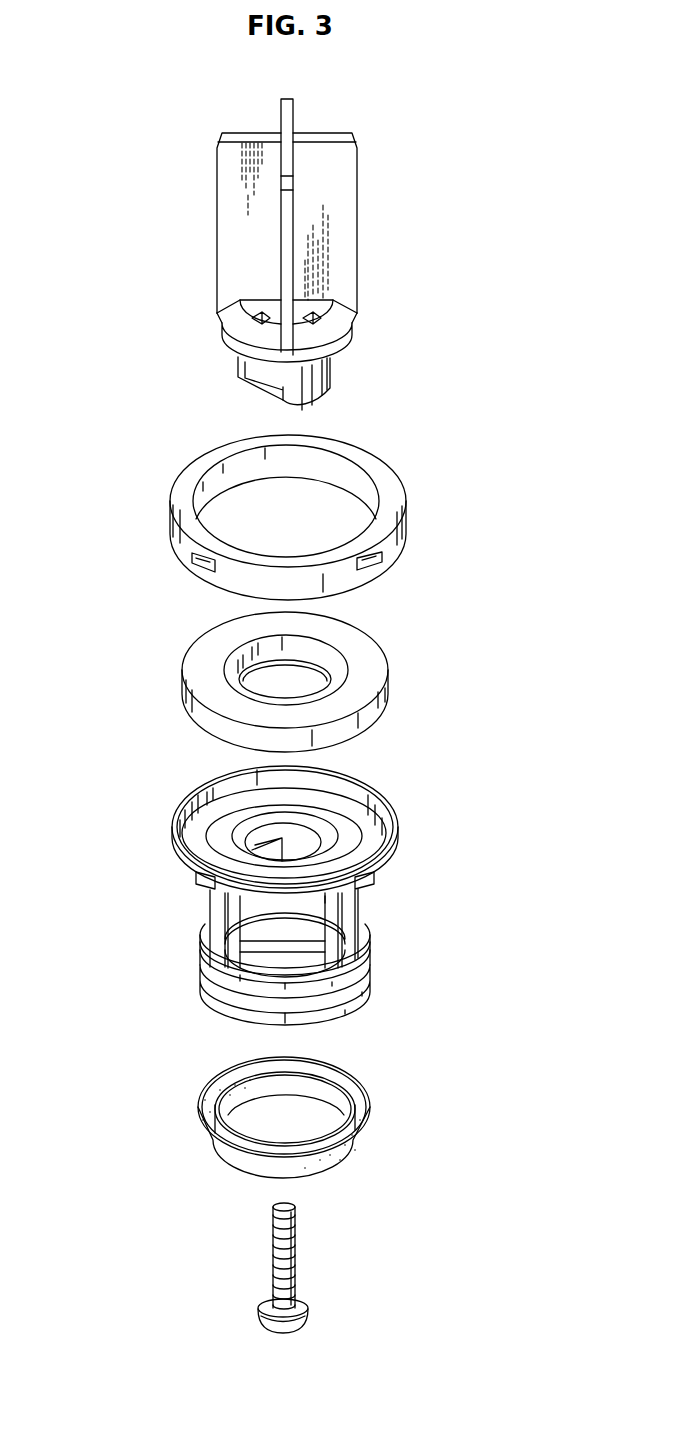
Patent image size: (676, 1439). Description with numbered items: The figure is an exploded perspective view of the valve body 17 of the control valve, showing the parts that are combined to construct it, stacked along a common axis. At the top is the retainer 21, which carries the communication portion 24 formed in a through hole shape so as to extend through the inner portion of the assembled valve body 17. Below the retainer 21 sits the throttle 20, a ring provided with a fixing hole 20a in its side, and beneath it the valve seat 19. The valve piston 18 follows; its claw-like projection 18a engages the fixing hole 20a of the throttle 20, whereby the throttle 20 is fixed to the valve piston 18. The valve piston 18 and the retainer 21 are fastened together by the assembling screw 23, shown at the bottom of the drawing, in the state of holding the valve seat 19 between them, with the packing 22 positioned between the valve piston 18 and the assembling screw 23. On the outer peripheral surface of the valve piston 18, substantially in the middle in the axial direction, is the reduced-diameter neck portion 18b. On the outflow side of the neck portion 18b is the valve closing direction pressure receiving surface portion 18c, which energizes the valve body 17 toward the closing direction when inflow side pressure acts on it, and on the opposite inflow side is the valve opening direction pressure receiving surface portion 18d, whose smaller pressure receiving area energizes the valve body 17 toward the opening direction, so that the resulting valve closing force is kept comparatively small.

The valve body 17 is at (142, 239).
The valve piston 18 is at (398, 830).
The claw-like projection 18a is at (196, 880).
The neck portion 18b is at (280, 933).
The valve closing direction pressure receiving surface portion 18c is at (282, 917).
The valve opening direction pressure receiving surface portion 18d is at (270, 979).
The valve seat 19 is at (373, 672).
The throttle 20 is at (382, 484).
The fixing hole 20a is at (202, 567).
The retainer 21 is at (357, 262).
The packing 22 is at (362, 1083).
The assembling screw 23 is at (292, 1275).
The communication portion 24 is at (218, 318).